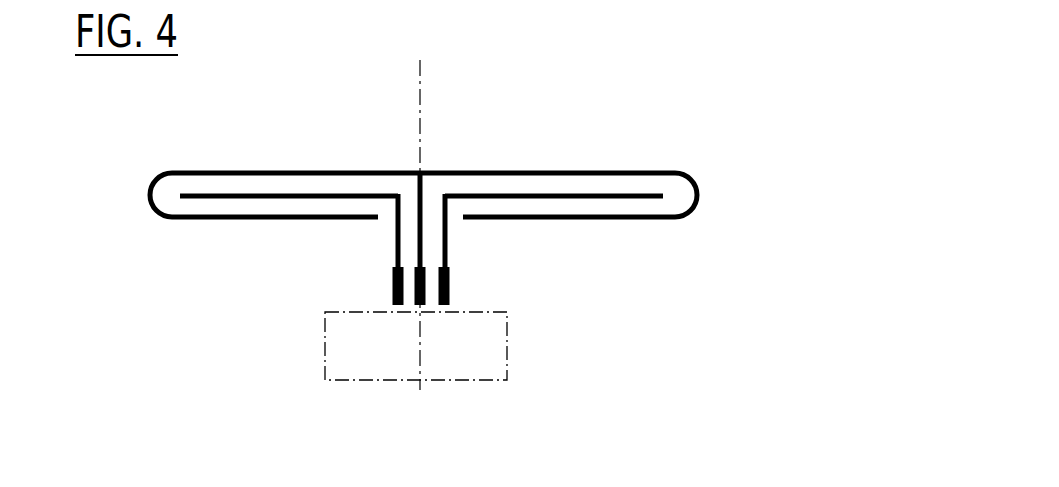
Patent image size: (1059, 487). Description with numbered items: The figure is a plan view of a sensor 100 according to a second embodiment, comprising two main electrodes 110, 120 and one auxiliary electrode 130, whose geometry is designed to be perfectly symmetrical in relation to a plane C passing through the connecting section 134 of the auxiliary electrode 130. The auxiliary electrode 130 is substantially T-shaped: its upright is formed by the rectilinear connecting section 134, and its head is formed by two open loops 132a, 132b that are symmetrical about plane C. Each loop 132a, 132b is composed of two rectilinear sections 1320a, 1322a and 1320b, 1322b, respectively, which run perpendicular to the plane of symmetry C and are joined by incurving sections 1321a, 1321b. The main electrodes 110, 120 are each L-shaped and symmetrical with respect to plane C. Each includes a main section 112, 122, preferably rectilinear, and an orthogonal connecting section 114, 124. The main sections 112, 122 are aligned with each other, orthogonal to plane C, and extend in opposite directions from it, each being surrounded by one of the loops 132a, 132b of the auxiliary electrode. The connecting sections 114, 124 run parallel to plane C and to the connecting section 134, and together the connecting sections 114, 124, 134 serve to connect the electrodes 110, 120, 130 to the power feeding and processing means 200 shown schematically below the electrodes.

The sensor 100 is at (428, 261).
The main electrode 110 is at (292, 266).
The main section 112 is at (310, 196).
The connecting section 114 is at (396, 248).
The main electrode 120 is at (551, 311).
The main section 122 is at (552, 198).
The connecting section 124 is at (447, 247).
The auxiliary electrode 130 is at (428, 261).
The open loop 132a is at (231, 193).
The open loop 132b is at (616, 181).
The connecting section 134 is at (415, 306).
The rectilinear section 1320a is at (205, 220).
The rectilinear section 1320b is at (588, 220).
The incurving section 1321a is at (149, 193).
The incurving section 1321b is at (700, 197).
The rectilinear section 1322a is at (188, 171).
The rectilinear section 1322b is at (572, 171).
The power feeding and processing means 200 is at (508, 343).
The plane of symmetry C is at (420, 92).